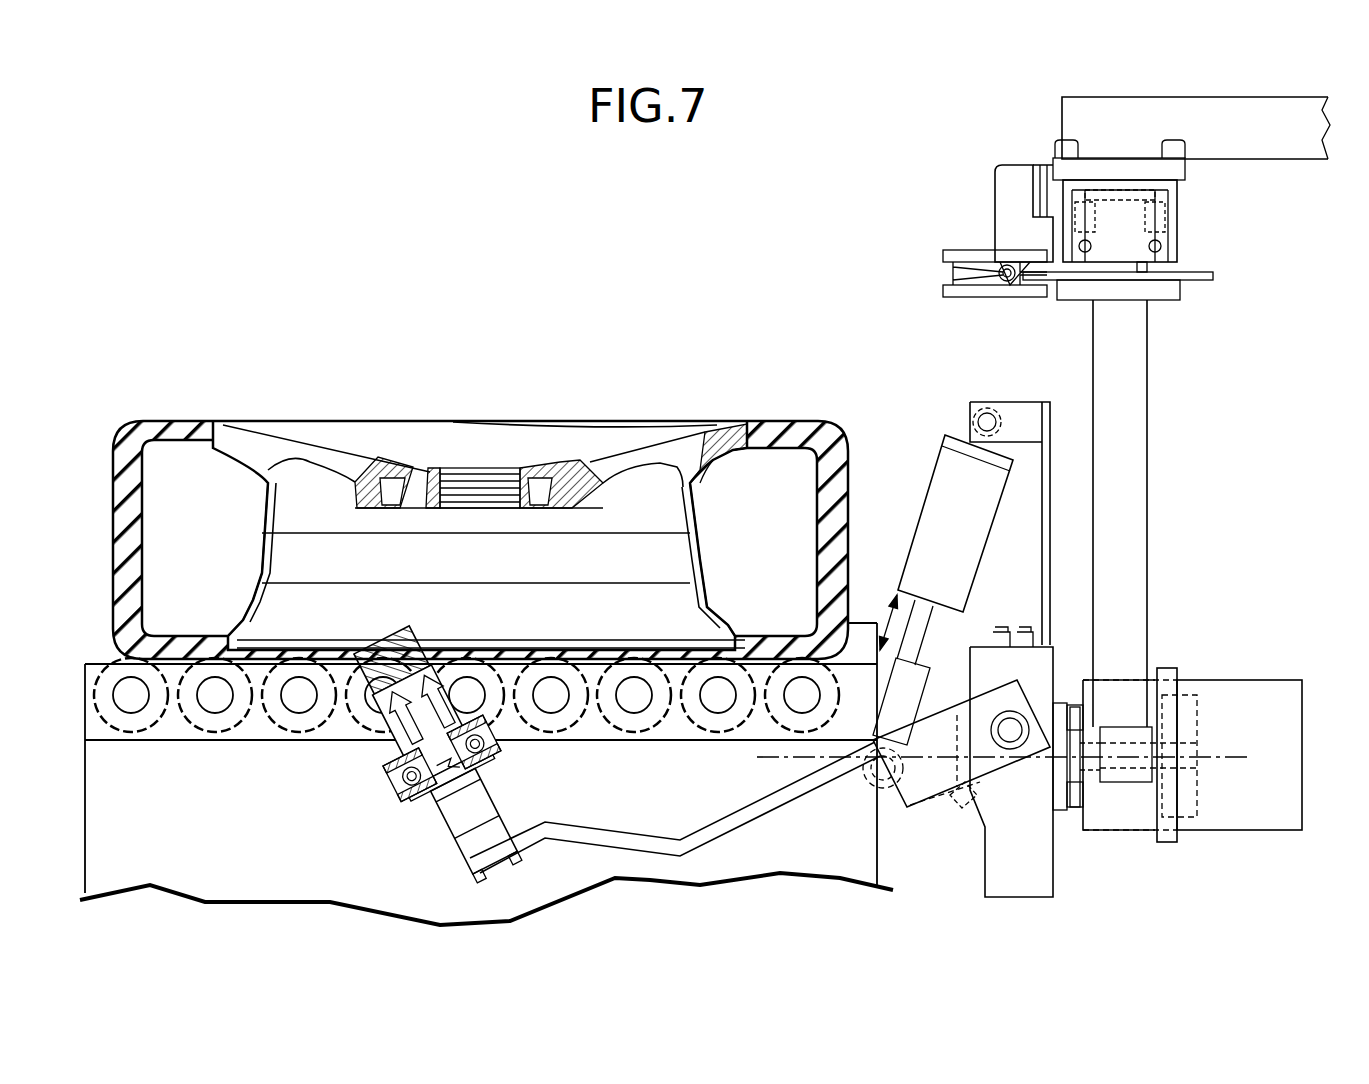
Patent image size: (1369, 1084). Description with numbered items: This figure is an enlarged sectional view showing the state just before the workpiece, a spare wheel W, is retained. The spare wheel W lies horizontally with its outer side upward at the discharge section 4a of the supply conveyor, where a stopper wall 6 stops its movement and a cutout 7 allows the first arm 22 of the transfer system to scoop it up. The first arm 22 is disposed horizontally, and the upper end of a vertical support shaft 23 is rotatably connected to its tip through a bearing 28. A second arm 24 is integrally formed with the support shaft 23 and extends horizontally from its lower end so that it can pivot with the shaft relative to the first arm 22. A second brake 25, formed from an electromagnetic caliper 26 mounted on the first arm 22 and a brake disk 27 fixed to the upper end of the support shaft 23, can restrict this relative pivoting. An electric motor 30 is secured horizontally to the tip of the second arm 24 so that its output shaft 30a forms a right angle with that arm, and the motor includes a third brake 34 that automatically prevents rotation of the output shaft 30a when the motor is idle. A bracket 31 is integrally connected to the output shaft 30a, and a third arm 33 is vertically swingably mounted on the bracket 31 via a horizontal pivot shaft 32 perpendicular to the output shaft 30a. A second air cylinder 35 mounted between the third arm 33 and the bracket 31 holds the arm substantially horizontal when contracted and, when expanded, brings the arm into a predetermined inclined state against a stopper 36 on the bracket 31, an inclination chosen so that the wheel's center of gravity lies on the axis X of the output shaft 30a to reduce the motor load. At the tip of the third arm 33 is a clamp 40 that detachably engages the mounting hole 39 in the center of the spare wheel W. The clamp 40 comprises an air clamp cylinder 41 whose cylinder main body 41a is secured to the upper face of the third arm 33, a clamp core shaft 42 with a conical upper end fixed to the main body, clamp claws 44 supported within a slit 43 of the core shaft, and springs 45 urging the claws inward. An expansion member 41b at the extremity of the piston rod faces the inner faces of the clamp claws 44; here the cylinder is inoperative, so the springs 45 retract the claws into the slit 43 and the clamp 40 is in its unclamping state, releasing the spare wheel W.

The spare wheel W is at (718, 420).
The mounting hole 39 is at (507, 475).
The stopper wall 6 is at (825, 633).
The cutout 7 is at (673, 675).
The discharge section 4a is at (96, 670).
The clamp 40 is at (446, 722).
The clamp core shaft 42 is at (397, 655).
The slit 43 is at (398, 717).
The clamp claws 44 is at (478, 728).
The springs 45 is at (483, 748).
The air clamp cylinder 41 is at (468, 833).
The cylinder main body 41a is at (498, 813).
The expansion member 41b is at (452, 790).
The third arm 33 is at (752, 816).
The axis of the output shaft X is at (803, 760).
The horizontal pivot shaft 32 is at (1012, 748).
The stopper 36 is at (955, 805).
The second air cylinder 35 is at (925, 542).
The bracket 31 is at (1027, 680).
The support shaft 23 is at (1132, 503).
The third brake 34 is at (1182, 714).
The second arm 24 is at (1128, 740).
The electric motor 30 is at (1212, 783).
The output shaft 30a is at (1125, 785).
The first arm 22 is at (1240, 143).
The bearing 28 is at (1165, 225).
The brake disk 27 is at (1190, 280).
The second brake 25 is at (982, 220).
The electromagnetic caliper 26 is at (970, 250).